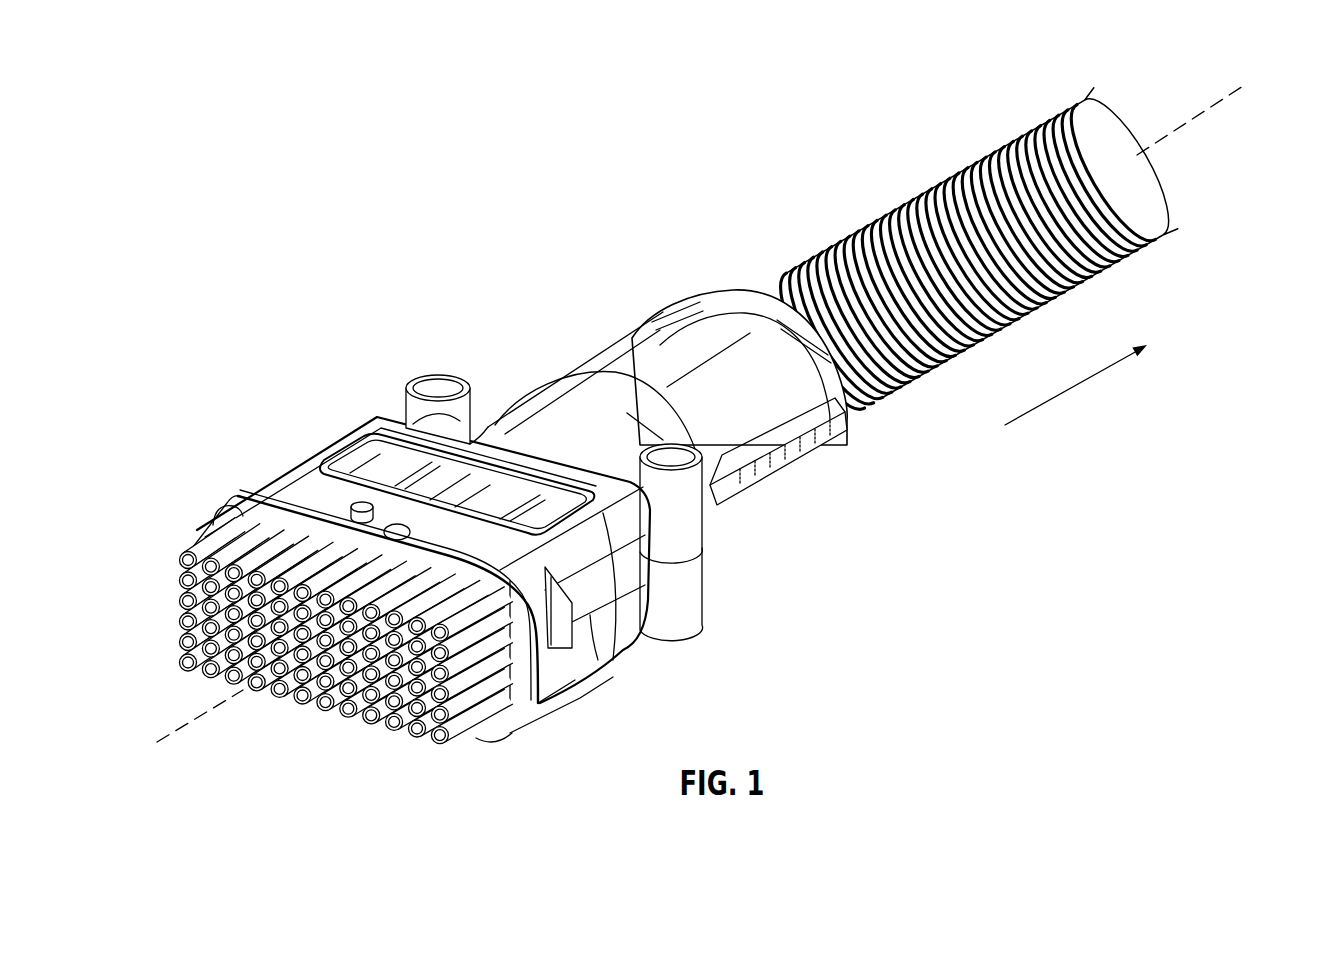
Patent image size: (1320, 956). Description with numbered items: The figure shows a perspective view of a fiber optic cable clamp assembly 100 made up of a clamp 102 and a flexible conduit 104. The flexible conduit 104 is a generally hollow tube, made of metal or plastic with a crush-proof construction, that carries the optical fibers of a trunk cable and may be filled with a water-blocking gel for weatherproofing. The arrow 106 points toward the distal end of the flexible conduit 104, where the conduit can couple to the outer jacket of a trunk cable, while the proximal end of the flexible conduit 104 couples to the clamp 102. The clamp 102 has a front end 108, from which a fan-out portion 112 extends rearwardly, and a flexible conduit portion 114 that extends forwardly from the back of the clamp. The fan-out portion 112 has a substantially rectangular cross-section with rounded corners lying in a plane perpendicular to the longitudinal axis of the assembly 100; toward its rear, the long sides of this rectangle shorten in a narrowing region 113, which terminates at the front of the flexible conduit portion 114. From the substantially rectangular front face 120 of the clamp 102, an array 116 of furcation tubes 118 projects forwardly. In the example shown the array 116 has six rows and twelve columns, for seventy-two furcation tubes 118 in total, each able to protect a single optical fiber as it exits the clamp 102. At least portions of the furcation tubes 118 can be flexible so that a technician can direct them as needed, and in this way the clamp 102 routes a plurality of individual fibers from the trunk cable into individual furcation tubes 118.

The fiber optic cable clamp assembly 100 is at (370, 158).
The clamp 102 is at (486, 322).
The flexible conduit 104 is at (1017, 150).
The arrow 106 is at (1070, 386).
The front end 108 is at (214, 522).
The fan-out portion 112 is at (628, 632).
The narrowing region 113 is at (488, 428).
The flexible conduit portion 114 is at (752, 300).
The array 116 is at (286, 736).
The furcation tubes 118 is at (470, 740).
The front face 120 is at (512, 735).